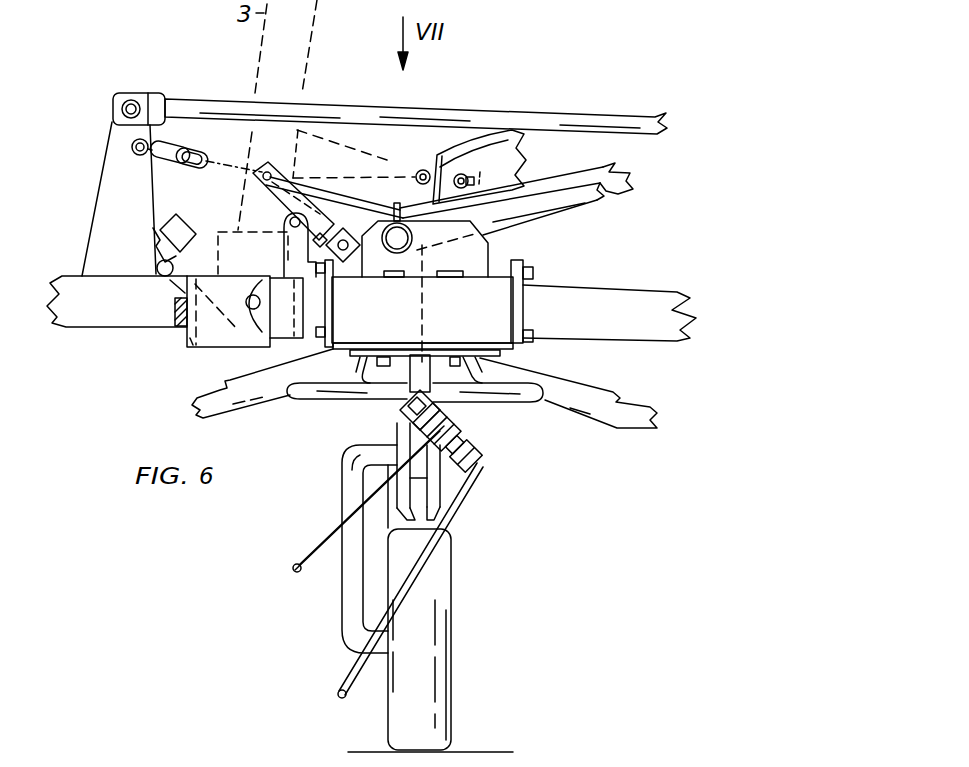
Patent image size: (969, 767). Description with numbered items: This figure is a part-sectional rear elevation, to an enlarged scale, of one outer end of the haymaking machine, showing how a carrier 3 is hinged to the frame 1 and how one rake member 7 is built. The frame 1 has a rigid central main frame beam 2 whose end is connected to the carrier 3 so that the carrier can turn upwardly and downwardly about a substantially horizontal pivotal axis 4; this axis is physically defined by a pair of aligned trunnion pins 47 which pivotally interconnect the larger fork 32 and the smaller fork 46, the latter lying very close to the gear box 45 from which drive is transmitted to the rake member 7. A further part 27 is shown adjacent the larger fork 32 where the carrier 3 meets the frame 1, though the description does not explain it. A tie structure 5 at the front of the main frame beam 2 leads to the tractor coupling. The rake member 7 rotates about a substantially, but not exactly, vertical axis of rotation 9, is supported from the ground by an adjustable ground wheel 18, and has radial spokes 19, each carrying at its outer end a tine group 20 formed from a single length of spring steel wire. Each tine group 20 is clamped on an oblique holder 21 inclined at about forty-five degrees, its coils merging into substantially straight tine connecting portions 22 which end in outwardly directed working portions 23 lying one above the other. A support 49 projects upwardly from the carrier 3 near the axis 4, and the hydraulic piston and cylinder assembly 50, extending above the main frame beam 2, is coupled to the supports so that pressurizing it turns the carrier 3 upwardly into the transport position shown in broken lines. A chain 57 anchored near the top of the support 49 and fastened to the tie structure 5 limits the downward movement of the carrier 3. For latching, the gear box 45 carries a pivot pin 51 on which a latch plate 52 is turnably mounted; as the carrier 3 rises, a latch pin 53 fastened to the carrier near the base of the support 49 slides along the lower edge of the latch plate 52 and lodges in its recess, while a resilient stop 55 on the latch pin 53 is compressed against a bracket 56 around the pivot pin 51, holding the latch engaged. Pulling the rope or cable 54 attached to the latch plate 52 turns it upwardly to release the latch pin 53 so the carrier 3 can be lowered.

The frame 1 is at (603, 282).
The main frame beam 2 is at (640, 295).
The carrier 3 is at (99, 329).
The pivotal axis 4 is at (240, 348).
The tie structure 5 is at (585, 172).
The rake member 7 is at (172, 423).
The axis of rotation 9 is at (427, 316).
The ground wheel 18 is at (453, 692).
The spoke 19 is at (287, 395).
The tine group 20 is at (527, 460).
The holder 21 is at (476, 470).
The tine connecting portion 22 is at (340, 517).
The working portion 23 is at (293, 567).
The spacer 27 is at (176, 310).
The larger fork 32 is at (190, 340).
The gear box 45 is at (503, 310).
The smaller fork 46 is at (283, 334).
The trunnion pin 47 is at (254, 282).
The support 49 is at (113, 150).
The hydraulic piston and cylinder assembly 50 is at (586, 120).
The pivot pin 51 is at (341, 262).
The latch plate 52 is at (278, 168).
The latch pin 53 is at (157, 268).
The rope or cable 54 is at (597, 205).
The resilient stop 55 is at (186, 217).
The bracket 56 is at (351, 214).
The chain 57 is at (196, 157).